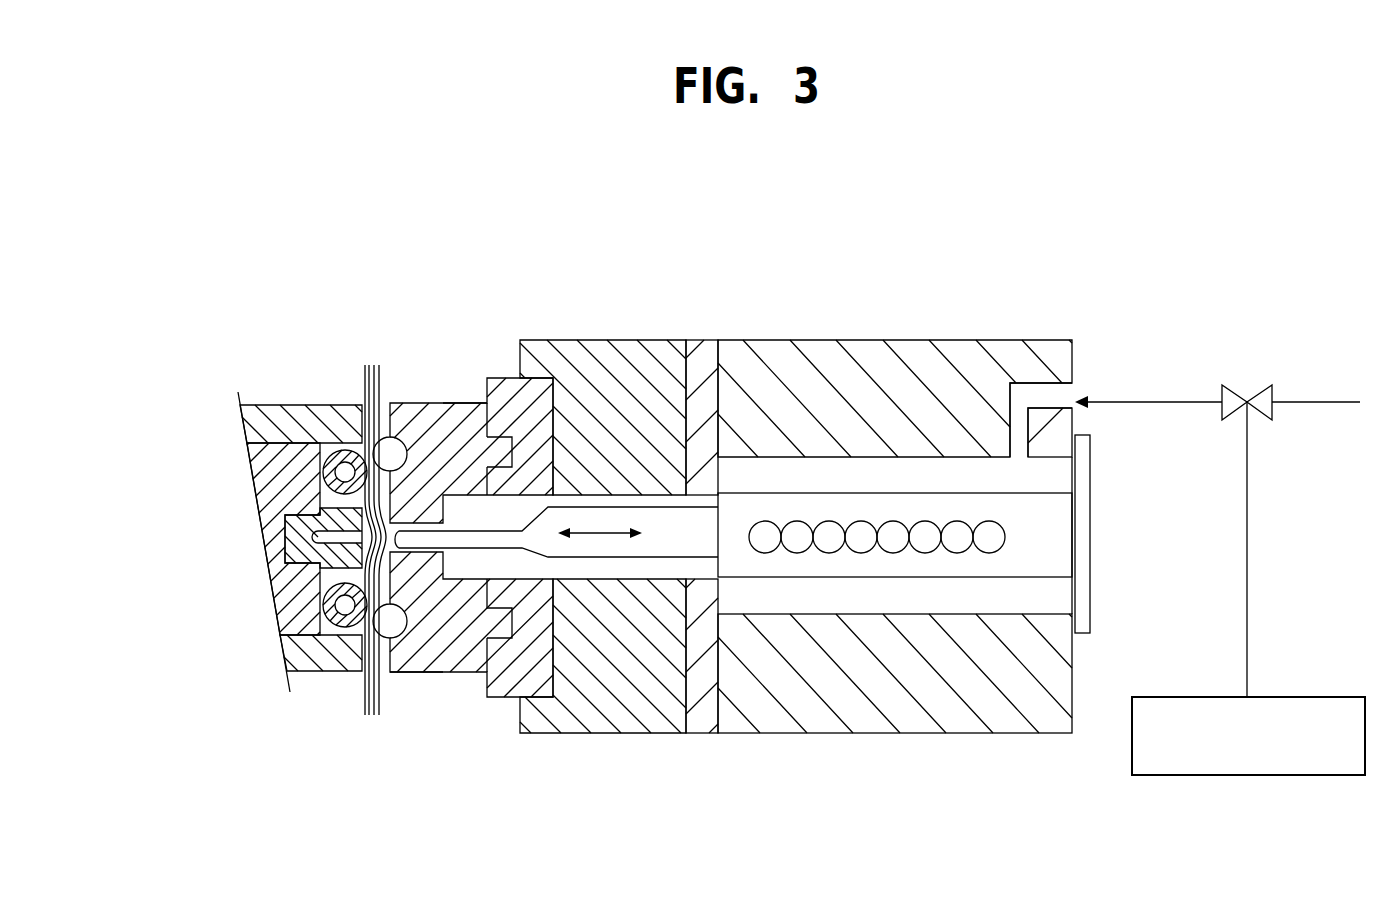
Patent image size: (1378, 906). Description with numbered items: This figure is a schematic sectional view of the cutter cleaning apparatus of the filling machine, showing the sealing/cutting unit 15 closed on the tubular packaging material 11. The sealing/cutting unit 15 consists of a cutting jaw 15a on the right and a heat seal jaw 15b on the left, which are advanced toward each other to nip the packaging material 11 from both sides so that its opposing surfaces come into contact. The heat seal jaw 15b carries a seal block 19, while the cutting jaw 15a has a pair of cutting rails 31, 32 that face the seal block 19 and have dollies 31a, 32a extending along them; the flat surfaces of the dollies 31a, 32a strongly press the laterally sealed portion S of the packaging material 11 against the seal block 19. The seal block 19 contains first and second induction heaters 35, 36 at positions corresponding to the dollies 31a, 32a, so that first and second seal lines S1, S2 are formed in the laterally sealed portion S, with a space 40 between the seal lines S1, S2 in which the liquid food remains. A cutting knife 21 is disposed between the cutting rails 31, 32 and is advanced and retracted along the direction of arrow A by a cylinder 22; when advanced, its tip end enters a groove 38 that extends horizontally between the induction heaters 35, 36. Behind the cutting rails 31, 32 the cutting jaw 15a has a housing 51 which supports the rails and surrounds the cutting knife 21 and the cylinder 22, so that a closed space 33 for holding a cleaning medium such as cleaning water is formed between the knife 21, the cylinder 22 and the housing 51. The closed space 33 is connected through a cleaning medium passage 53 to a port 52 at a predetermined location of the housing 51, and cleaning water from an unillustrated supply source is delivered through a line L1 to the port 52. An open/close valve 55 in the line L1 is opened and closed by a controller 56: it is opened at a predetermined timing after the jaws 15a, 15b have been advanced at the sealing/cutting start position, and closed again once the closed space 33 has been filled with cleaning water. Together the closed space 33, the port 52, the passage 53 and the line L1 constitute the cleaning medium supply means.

The sealing/cutting unit 15 is at (364, 268).
The cutting jaw 15a is at (684, 798).
The heat seal jaw 15b is at (305, 704).
The seal block 19 is at (328, 428).
The tubular packaging material 11 is at (388, 368).
The laterally sealed portion S is at (354, 688).
The first seal line S1 is at (423, 440).
The second seal line S2 is at (430, 640).
The cutting rail 31 is at (520, 505).
The dolly 31a is at (472, 426).
The cutting rail 32 is at (472, 632).
The dolly 32a is at (390, 672).
The closed space 33 is at (557, 423).
The first induction heater 35 is at (323, 470).
The second induction heater 36 is at (320, 612).
The groove 38 is at (316, 540).
The space 40 is at (300, 572).
The cutting knife 21 is at (503, 550).
The cylinder 22 is at (1007, 580).
The housing 51 is at (846, 324).
The port 52 is at (1078, 392).
The cleaning medium passage 53 is at (1034, 395).
The open/close valve 55 is at (1262, 392).
The controller 56 is at (1316, 697).
The line L1 is at (1303, 405).